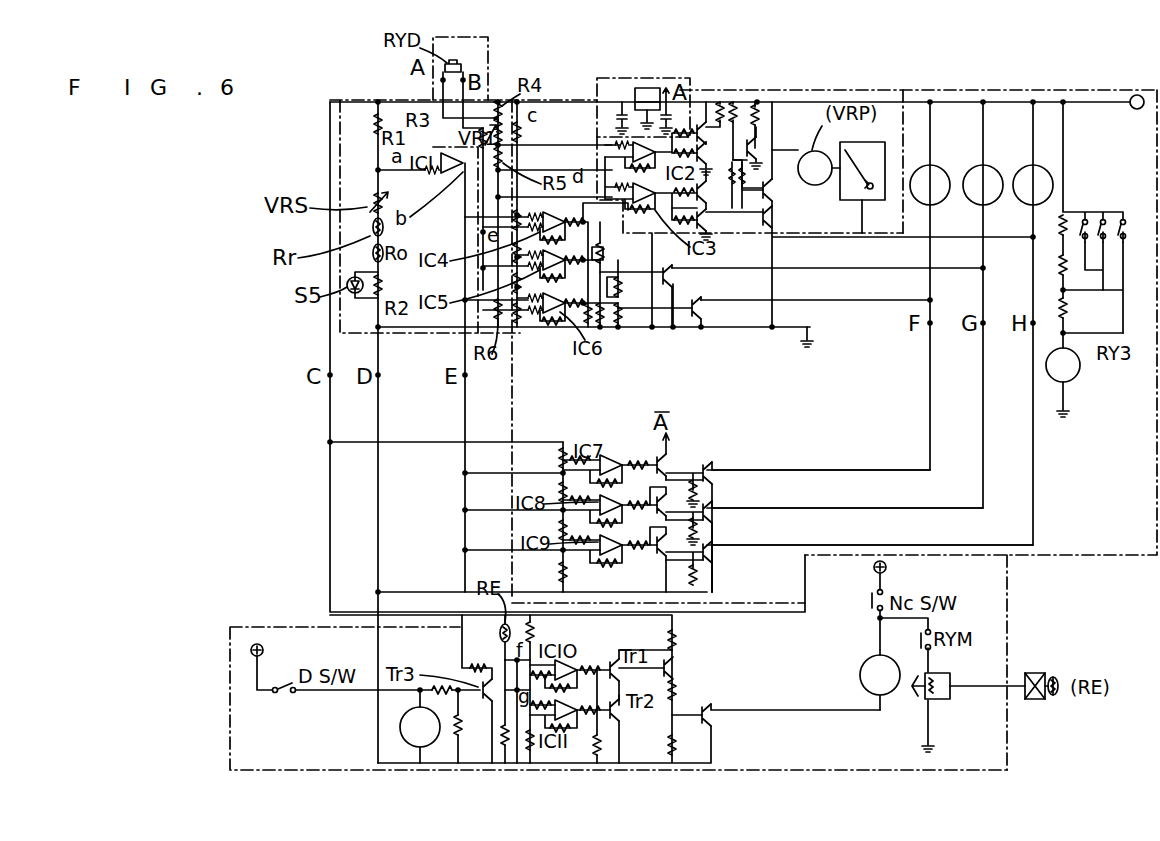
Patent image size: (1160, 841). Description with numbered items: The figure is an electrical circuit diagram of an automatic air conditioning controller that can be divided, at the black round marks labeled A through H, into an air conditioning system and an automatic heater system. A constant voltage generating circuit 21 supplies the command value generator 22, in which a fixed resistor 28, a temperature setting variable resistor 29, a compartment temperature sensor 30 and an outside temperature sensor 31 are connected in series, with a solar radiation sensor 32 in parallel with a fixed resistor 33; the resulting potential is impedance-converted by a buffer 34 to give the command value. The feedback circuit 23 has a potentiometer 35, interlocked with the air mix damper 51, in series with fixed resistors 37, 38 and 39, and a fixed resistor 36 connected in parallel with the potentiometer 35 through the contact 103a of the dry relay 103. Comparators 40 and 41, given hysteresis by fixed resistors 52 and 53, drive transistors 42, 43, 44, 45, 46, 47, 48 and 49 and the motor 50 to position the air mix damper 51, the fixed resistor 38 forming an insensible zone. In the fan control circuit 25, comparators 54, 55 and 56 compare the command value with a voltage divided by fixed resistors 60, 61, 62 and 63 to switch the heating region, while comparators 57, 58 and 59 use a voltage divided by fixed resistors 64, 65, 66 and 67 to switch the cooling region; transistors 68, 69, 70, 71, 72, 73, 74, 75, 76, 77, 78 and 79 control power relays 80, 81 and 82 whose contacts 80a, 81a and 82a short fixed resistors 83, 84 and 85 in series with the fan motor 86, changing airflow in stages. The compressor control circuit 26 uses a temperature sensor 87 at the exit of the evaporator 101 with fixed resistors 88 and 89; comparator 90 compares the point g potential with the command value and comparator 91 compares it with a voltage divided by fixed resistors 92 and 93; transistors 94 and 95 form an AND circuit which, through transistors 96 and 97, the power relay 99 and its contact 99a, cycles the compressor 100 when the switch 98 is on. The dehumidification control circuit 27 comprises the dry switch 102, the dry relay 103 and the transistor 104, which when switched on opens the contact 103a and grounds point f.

The constant voltage generating circuit 21 is at (690, 78).
The circuit for generating a command value 22 is at (390, 100).
The circuit for producing an amount of feedback of an air mix damper opening 23 is at (430, 50).
The fan control circuit 25 is at (1038, 90).
The control circuit for turning on and off a compressor 26 is at (1012, 615).
The dehumidification control circuit 27 is at (230, 718).
The fixed resistor (R1) 28 is at (372, 124).
The variable resistor (VRS) 29 is at (370, 200).
The sensor (Rr) 30 is at (372, 225).
The sensor (Ro) 31 is at (372, 253).
The sensor (SS) 32 is at (330, 302).
The fixed resistor (R2) 33 is at (383, 286).
The buffer (IC1) 34 is at (388, 194).
The potentiometer (VRP) 35 is at (878, 90).
The fixed resistor (R3) 36 is at (478, 130).
The fixed resistor (R4) 37 is at (495, 108).
The fixed resistor (R5) 38 is at (492, 180).
The fixed resistor (R6) 39 is at (470, 322).
The comparator (IC2) 40 is at (630, 135).
The comparator (IC3) 41 is at (630, 185).
The transistor 42 is at (721, 103).
The transistor 43 is at (736, 106).
The transistor 44 is at (710, 160).
The transistor 45 is at (712, 228).
The transistor 46 is at (758, 108).
The transistor 47 is at (760, 150).
The transistor 48 is at (776, 194).
The transistor 49 is at (780, 228).
The motor 50 is at (815, 151).
The air mix damper 51 is at (862, 187).
The fixed resistor 52 is at (687, 207).
The fixed resistor 53 is at (678, 272).
The comparator (IC4) 54 is at (583, 222).
The comparator (IC5) 55 is at (565, 262).
The comparator (IC6) 56 is at (600, 327).
The comparator (IC7) 57 is at (606, 456).
The comparator (IC8) 58 is at (630, 498).
The comparator (IC9) 59 is at (612, 558).
The fixed resistor 60 is at (527, 139).
The fixed resistor 61 is at (512, 232).
The fixed resistor 62 is at (519, 295).
The fixed resistor 63 is at (514, 320).
The fixed resistor 64 is at (512, 464).
The fixed resistor 65 is at (556, 492).
The fixed resistor 66 is at (556, 527).
The fixed resistor 67 is at (558, 576).
The transistor 68 is at (606, 250).
The transistor 69 is at (619, 288).
The transistor 70 is at (621, 327).
The transistor 71 is at (653, 322).
The transistor 72 is at (675, 330).
The transistor 73 is at (706, 318).
The transistor 74 is at (668, 472).
The transistor 75 is at (662, 518).
The transistor 76 is at (664, 560).
The transistor 77 is at (716, 482).
The transistor 78 is at (716, 520).
The transistor 79 is at (716, 560).
The power relay (RY1) 80 is at (945, 202).
The contact of power relay RY1 80a is at (1083, 215).
The power relay (RY2) 81 is at (998, 202).
The contact of power relay RY2 81a is at (1100, 215).
The power relay (RY3) 82 is at (1022, 170).
The contact of power relay RY3 82a is at (1120, 215).
The fixed resistor 83 is at (1060, 234).
The fixed resistor 84 is at (1060, 273).
The fixed resistor 85 is at (1060, 311).
The fan motor 86 is at (1046, 371).
The temperature sensor (RE) 87 is at (500, 628).
The fixed resistor 88 is at (470, 667).
The fixed resistor 89 is at (450, 738).
The comparator (IC10) 90 is at (570, 667).
The comparator (IC11) 91 is at (572, 712).
The fixed resistor 92 is at (536, 630).
The fixed resistor 93 is at (560, 747).
The transistor (TR1) 94 is at (622, 678).
The transistor (TR2) 95 is at (622, 717).
The transistor 96 is at (676, 665).
The transistor 97 is at (714, 714).
The switch (A/C S/W) 98 is at (870, 607).
The power relay (RYM) 99 is at (860, 682).
The contact of power relay RYM 99a is at (920, 647).
The compressor (COMP) 100 is at (948, 700).
The evaporator 101 is at (1035, 667).
The dry switch (DS/W) 102 is at (272, 686).
The dry relay (RYD) 103 is at (400, 732).
The contact of dry relay 103a is at (460, 62).
The transistor (TR3) 104 is at (450, 696).